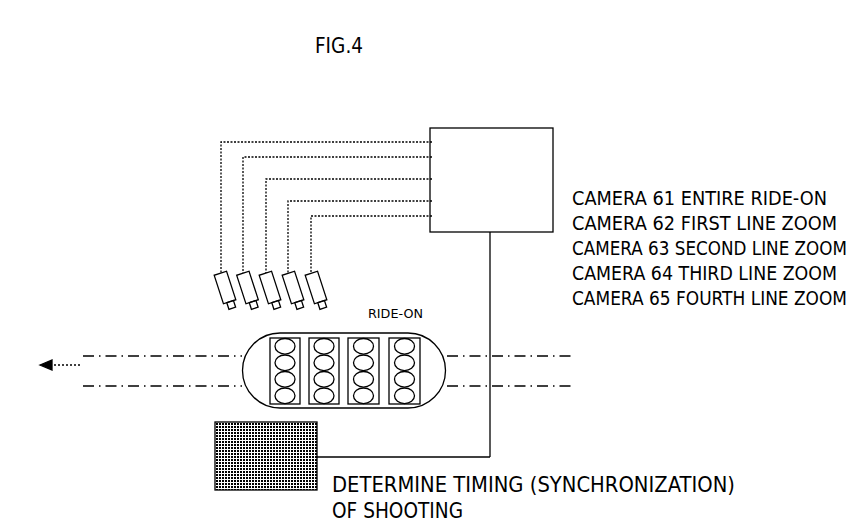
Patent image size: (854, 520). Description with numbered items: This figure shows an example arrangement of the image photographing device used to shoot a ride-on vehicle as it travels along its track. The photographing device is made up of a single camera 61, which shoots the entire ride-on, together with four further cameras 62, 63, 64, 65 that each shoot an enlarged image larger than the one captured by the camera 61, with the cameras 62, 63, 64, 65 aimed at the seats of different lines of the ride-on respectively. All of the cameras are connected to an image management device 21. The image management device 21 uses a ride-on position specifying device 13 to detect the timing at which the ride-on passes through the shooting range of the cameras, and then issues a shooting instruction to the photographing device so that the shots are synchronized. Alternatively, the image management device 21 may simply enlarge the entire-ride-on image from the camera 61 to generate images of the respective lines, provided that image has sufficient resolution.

The ride-on position specifying device 13 is at (215, 452).
The image management device 21 is at (553, 128).
The camera 61 is at (270, 311).
The camera 62 is at (215, 273).
The camera 63 is at (238, 273).
The camera 64 is at (297, 273).
The camera 65 is at (318, 273).